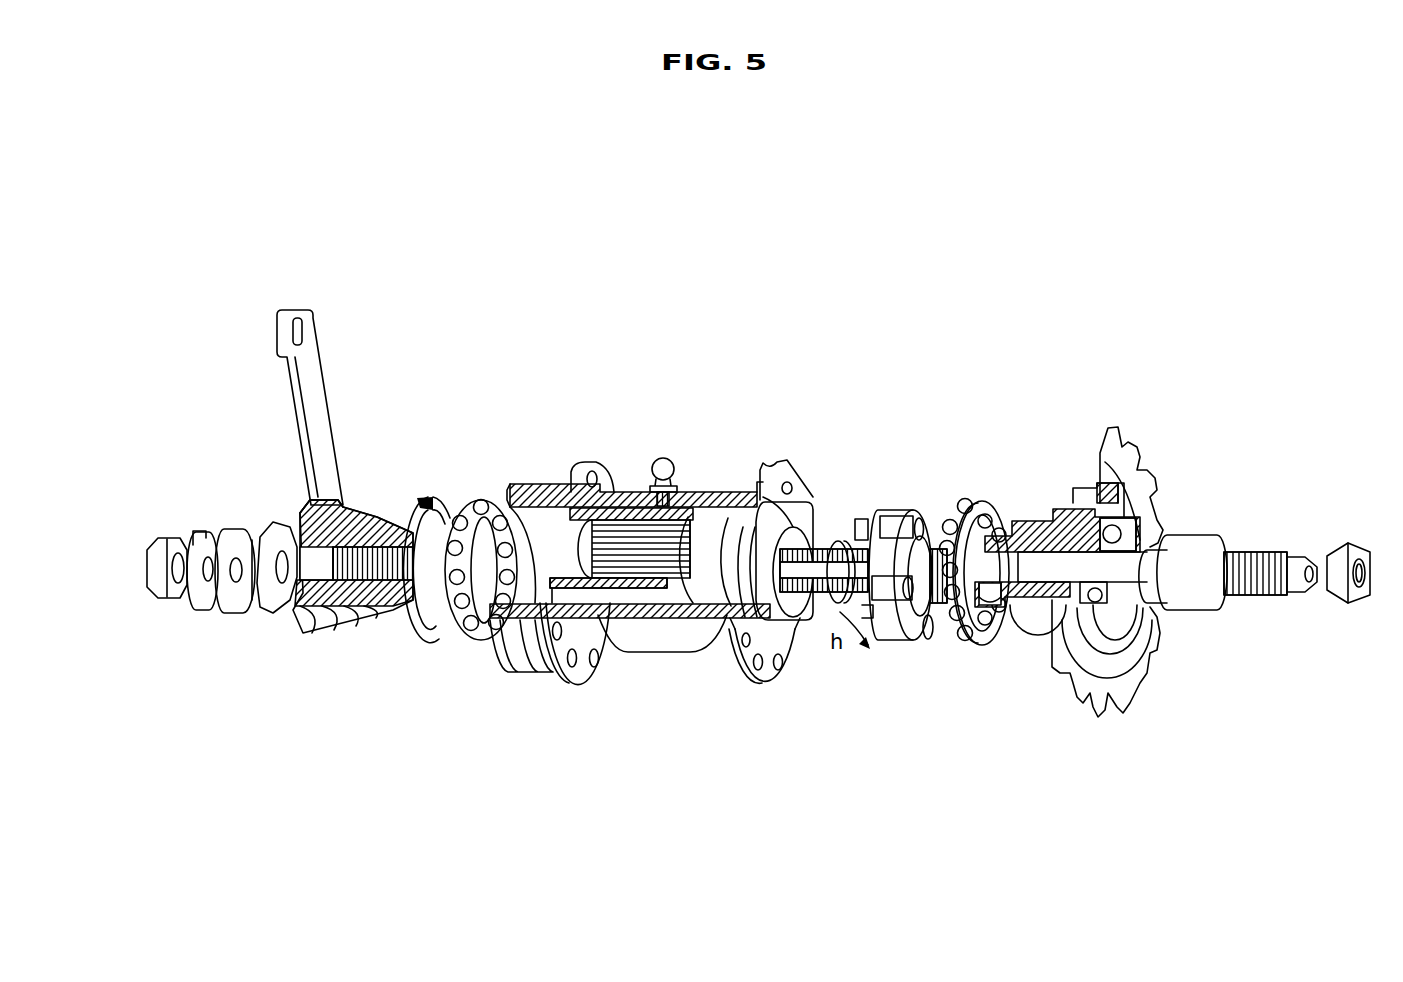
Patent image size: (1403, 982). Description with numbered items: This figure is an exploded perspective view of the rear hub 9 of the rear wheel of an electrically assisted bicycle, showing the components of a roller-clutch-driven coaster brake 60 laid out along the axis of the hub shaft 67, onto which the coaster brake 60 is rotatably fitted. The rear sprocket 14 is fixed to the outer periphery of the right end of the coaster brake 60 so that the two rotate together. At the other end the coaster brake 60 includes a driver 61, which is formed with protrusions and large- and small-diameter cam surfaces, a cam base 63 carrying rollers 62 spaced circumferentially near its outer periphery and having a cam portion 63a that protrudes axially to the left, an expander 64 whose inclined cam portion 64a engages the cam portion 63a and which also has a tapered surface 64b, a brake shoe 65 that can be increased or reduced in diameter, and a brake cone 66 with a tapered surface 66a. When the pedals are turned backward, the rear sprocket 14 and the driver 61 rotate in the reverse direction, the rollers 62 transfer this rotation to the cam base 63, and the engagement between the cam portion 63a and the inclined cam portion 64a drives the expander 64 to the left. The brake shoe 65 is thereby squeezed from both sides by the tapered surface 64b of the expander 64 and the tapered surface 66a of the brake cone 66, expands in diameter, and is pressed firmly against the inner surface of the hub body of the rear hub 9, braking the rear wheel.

The rear hub 9 is at (613, 490).
The rear sprocket 14 is at (1133, 460).
The coaster brake 60 is at (995, 443).
The driver 61 is at (1062, 520).
The rollers 62 is at (893, 522).
The cam base 63 is at (920, 513).
The cam portion 63a is at (857, 535).
The expander 64 is at (746, 542).
The inclined cam portion 64a is at (800, 620).
The tapered surface 64b is at (770, 540).
The brake shoe 65 is at (654, 605).
The brake cone 66 is at (375, 510).
The tapered surface 66a is at (387, 617).
The hub shaft 67 is at (1260, 562).